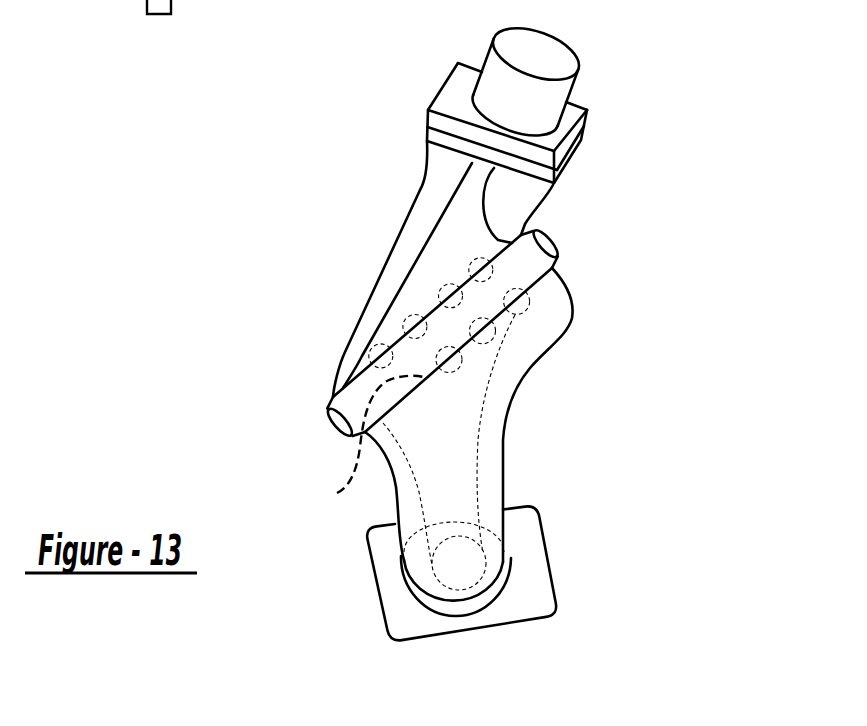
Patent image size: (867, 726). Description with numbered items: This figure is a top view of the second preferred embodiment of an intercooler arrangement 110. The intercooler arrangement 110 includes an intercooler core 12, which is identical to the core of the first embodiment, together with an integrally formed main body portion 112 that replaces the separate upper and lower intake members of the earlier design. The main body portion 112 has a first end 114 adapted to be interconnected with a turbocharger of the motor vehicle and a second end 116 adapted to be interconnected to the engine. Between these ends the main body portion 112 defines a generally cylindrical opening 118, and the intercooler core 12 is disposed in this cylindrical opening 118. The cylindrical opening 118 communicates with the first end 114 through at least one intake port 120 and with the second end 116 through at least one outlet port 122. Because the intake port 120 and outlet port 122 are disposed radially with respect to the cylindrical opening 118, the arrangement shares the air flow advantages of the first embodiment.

The intercooler core 12 is at (563, 243).
The intercooler arrangement 110 is at (630, 130).
The main body portion 112 is at (515, 408).
The first end 114 is at (452, 92).
The second end 116 is at (393, 605).
The cylindrical opening 118 is at (337, 493).
The intake port 120 is at (372, 349).
The outlet port 122 is at (531, 305).